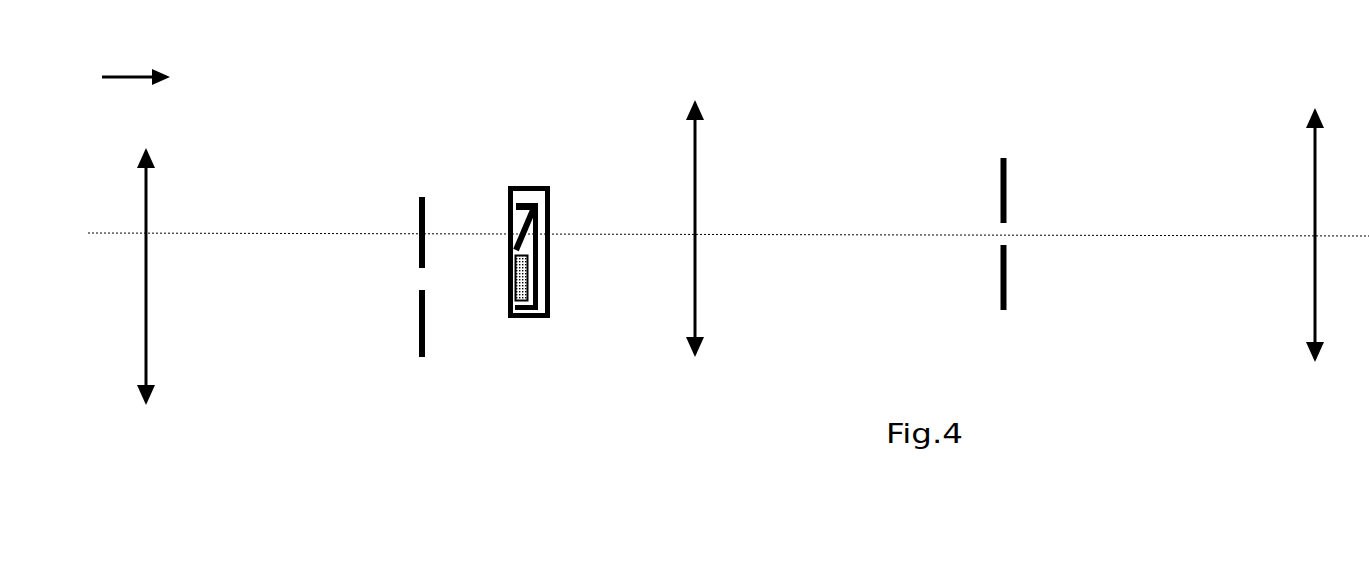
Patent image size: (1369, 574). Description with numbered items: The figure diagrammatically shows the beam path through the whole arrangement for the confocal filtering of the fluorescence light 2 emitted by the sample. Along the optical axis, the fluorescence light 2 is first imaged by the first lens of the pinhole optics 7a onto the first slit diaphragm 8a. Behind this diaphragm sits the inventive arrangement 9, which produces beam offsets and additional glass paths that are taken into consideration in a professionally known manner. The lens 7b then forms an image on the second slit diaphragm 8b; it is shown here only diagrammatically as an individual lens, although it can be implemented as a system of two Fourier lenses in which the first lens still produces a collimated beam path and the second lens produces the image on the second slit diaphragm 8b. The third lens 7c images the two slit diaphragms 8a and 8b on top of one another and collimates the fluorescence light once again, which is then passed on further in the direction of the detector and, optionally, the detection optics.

The fluorescence light 2 is at (136, 42).
The first lens of the pinhole optics 7a is at (150, 333).
The lens 7b is at (699, 283).
The third lens 7c is at (1319, 289).
The first slit diaphragm 8a is at (429, 226).
The second slit diaphragm 8b is at (1010, 190).
The inventive arrangement 9 is at (529, 302).